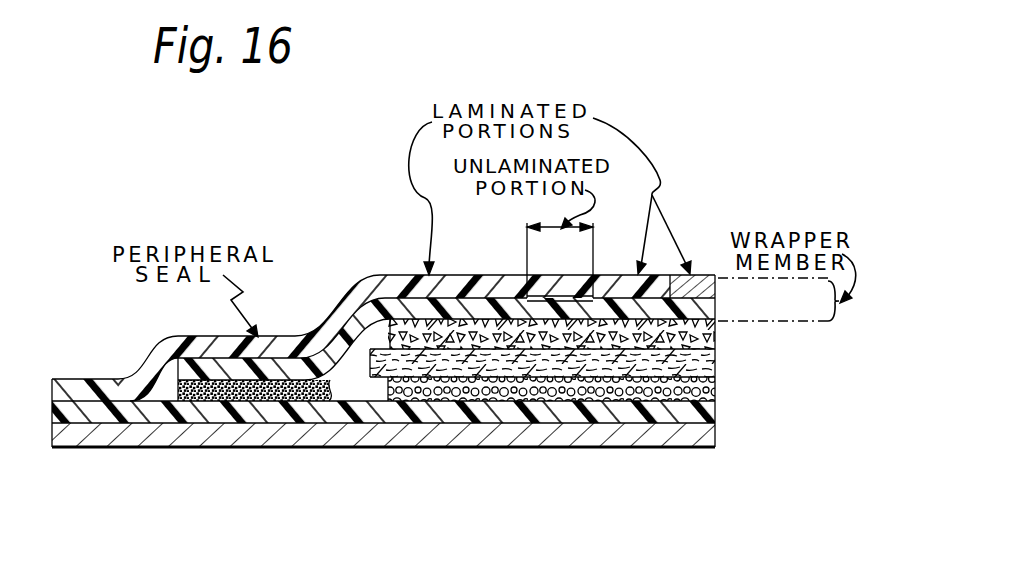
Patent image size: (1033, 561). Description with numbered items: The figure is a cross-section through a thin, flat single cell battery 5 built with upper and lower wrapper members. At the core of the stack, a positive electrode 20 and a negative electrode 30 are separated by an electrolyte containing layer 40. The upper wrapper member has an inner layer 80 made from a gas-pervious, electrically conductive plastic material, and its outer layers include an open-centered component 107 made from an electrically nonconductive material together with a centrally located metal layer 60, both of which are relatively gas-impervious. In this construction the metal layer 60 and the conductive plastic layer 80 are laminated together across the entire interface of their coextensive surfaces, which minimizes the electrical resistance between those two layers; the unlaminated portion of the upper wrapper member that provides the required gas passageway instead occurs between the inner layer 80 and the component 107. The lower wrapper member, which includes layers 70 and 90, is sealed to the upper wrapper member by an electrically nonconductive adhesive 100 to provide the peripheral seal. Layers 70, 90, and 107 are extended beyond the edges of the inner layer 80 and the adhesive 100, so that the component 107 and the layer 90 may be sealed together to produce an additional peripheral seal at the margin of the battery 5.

The battery 5 is at (430, 397).
The positive electrode 20 is at (716, 344).
The negative electrode 30 is at (716, 398).
The electrolyte containing layer 40 is at (716, 372).
The metal layer 60 is at (716, 290).
The lower wrapper layer 70 is at (716, 446).
The inner layer 80 is at (716, 312).
The lower wrapper layer 90 is at (716, 423).
The electrically nonconductive adhesive 100 is at (334, 388).
The open-centered component 107 is at (54, 386).